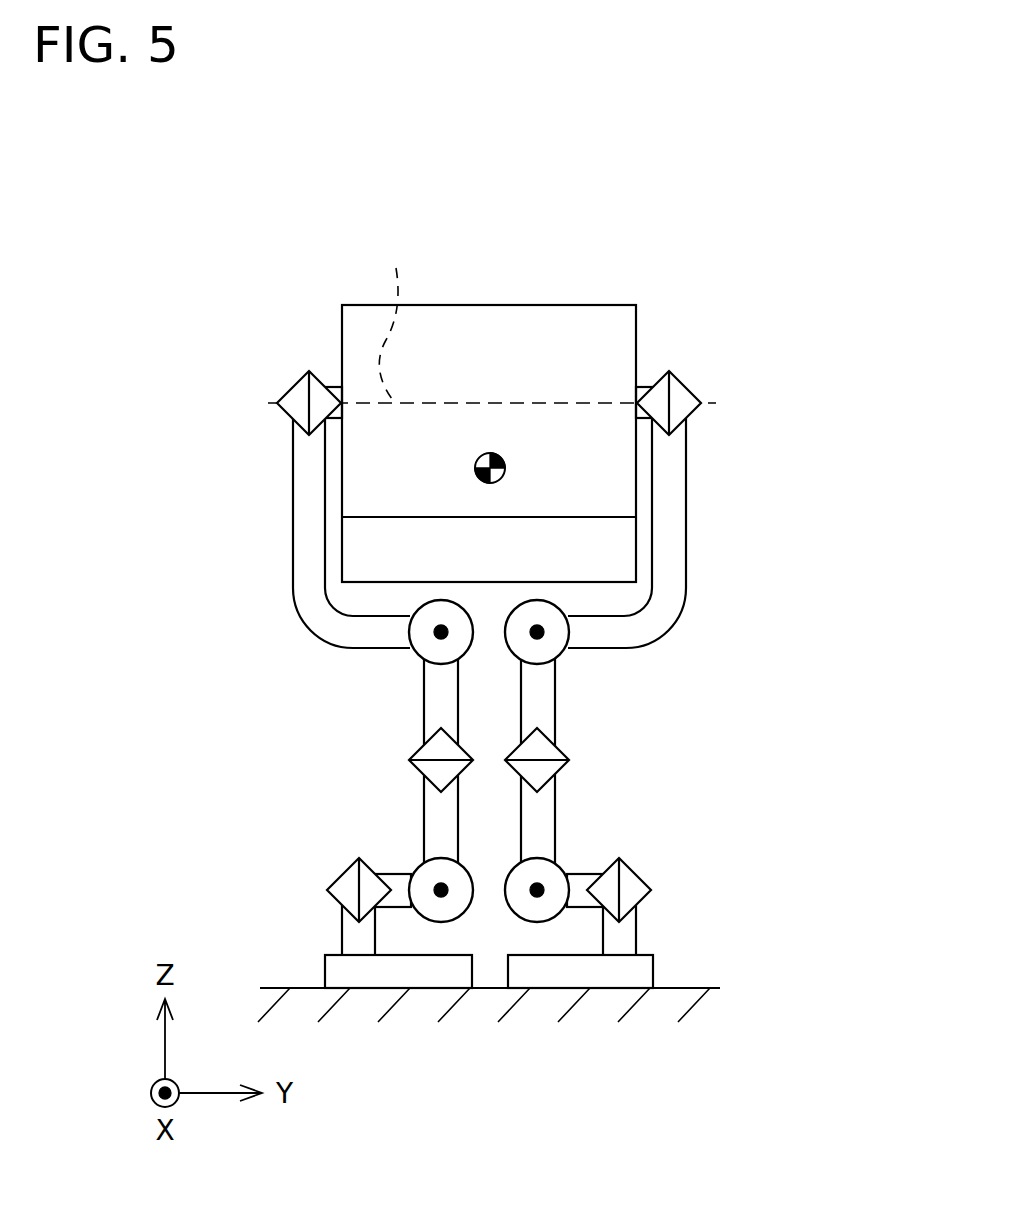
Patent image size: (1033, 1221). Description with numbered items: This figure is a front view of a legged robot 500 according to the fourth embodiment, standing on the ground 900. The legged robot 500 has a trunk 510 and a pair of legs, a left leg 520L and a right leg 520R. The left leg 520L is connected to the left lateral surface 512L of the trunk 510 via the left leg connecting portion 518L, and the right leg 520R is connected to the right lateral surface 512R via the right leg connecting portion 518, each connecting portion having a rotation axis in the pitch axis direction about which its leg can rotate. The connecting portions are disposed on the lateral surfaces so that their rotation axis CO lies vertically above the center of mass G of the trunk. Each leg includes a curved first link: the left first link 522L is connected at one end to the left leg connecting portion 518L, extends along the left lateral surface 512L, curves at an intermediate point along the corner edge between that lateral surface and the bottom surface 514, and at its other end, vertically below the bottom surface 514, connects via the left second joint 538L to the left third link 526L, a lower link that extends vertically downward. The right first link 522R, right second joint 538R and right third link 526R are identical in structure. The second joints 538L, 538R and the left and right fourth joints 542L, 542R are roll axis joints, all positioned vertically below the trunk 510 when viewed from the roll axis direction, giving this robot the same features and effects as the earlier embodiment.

The legged robot 500 is at (515, 220).
The trunk 510 is at (596, 305).
The right lateral surface 512R is at (342, 332).
The left lateral surface 512L is at (636, 332).
The bottom surface 514 is at (383, 556).
The right leg connecting portion 518 is at (300, 386).
The left leg connecting portion 518L is at (690, 384).
The right first link 522R is at (293, 478).
The left first link 522L is at (686, 478).
The right third link 526R is at (420, 705).
The left third link 526L is at (555, 705).
The right leg 520R is at (375, 752).
The left leg 520L is at (607, 752).
The right second joint 538R is at (415, 655).
The left second joint 538L is at (563, 655).
The right fourth joint 542R is at (415, 875).
The left fourth joint 542L is at (565, 875).
The ground 900 is at (688, 988).
The rotation axis CO is at (391, 320).
The center of mass G is at (478, 458).